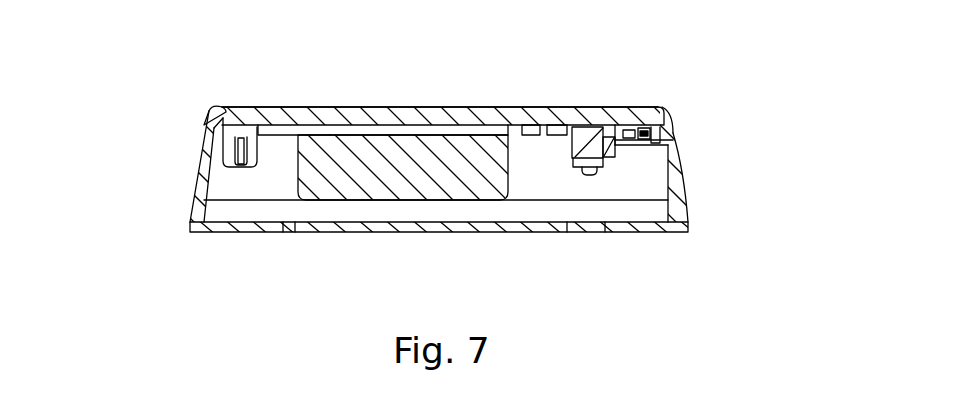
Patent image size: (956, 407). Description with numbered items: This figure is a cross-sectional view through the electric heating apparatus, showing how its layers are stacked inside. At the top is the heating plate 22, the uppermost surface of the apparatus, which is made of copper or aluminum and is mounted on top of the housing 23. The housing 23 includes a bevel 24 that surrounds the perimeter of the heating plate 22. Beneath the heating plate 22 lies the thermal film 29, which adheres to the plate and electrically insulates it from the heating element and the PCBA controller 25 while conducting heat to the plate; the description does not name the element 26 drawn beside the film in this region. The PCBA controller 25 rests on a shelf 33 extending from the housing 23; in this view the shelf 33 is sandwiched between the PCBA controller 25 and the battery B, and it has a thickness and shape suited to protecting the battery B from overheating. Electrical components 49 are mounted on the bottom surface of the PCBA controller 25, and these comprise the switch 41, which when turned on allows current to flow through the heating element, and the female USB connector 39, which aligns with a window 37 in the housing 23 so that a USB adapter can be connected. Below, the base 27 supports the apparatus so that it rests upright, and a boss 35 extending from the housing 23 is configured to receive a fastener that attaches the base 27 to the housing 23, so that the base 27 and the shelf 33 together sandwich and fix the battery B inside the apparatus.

The heating plate 22 is at (560, 110).
The housing 23 is at (680, 198).
The bevel 24 is at (220, 116).
The PCBA controller 25 is at (245, 118).
The adhesive layer 26 is at (277, 131).
The base 27 is at (233, 227).
The thermal film 29 is at (485, 110).
The shelf 33 is at (378, 128).
The boss 35 is at (240, 147).
The window 37 is at (674, 136).
The female USB connector 39 is at (637, 128).
The switch 41 is at (600, 152).
The electrical components 49 is at (552, 135).
The battery B is at (325, 180).